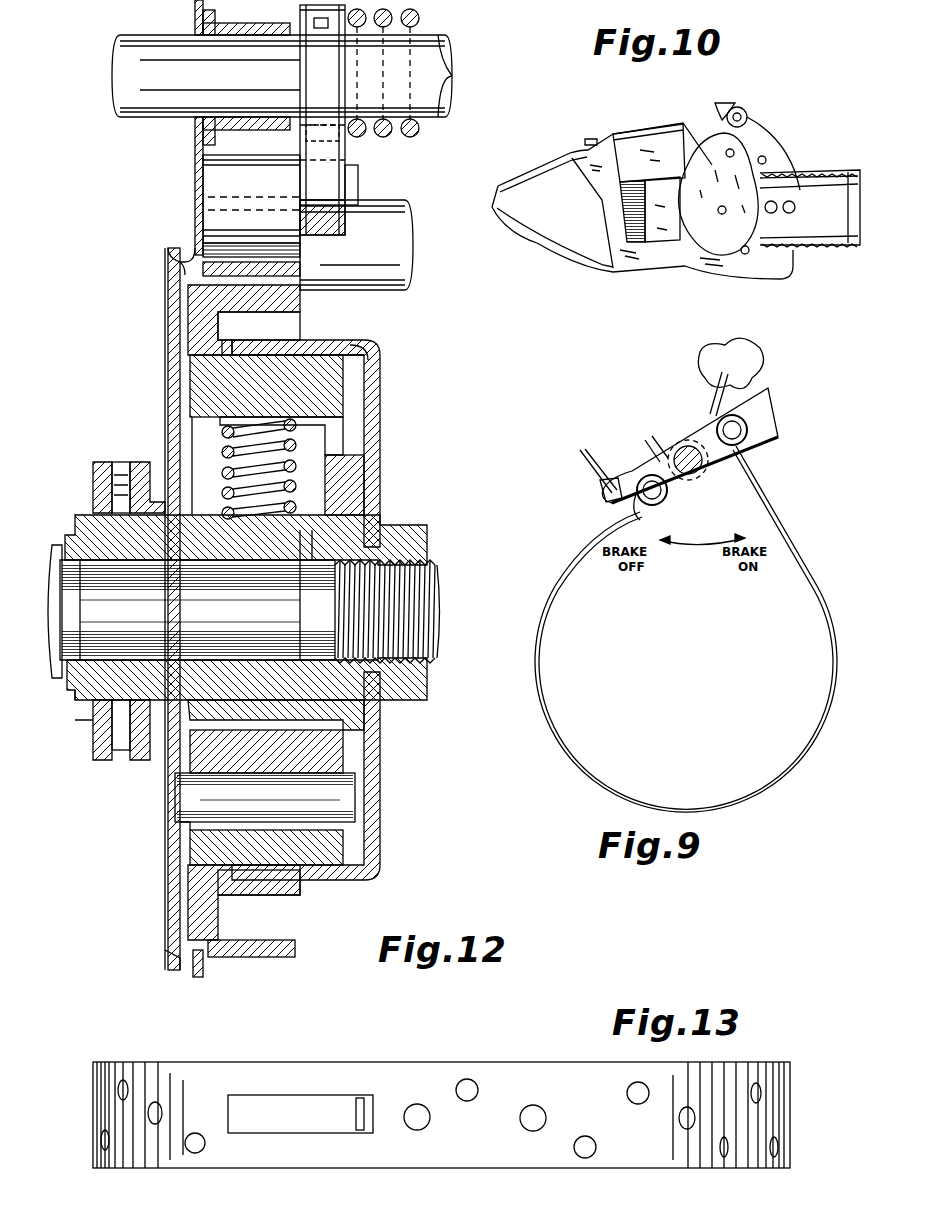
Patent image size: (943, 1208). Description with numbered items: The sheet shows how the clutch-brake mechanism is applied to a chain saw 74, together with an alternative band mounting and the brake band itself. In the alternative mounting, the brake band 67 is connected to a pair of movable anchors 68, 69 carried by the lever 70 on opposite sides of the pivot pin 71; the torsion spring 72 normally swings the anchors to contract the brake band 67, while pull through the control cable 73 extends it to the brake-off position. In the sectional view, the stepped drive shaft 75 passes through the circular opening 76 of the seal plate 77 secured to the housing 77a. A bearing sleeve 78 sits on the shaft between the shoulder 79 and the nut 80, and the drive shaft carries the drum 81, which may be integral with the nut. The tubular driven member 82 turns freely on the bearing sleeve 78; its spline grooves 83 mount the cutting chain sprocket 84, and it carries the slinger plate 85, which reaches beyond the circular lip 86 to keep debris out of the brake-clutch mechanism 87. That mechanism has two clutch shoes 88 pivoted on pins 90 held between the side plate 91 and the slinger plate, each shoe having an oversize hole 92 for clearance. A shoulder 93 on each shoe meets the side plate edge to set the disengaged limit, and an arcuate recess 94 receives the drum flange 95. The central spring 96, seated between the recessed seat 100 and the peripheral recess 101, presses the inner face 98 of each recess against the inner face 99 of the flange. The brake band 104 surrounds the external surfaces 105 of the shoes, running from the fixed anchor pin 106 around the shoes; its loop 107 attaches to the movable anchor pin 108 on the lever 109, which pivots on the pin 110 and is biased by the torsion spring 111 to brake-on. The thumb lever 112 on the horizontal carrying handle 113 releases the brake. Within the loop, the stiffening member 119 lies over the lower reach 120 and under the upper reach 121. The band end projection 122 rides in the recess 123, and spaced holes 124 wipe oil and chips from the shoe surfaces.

In FIG. 9, the brake band 67 is at (545, 697).
In FIG. 9, the movable anchor 68 is at (650, 496).
In FIG. 9, the movable anchor 69 is at (750, 428).
In FIG. 9, the lever 70 is at (745, 403).
In FIG. 9, the pivot pin 71 is at (694, 482).
In FIG. 9, the torsion spring 72 is at (712, 398).
In FIG. 9, the control cable 73 is at (585, 464).
In FIG. 10, the chain saw 74 is at (663, 112).
In FIG. 12, the stepped drive shaft 75 is at (185, 614).
In FIG. 12, the circular opening 76 is at (166, 955).
In FIG. 12, the seal plate 77 is at (195, 198).
In FIG. 10, the housing 77a is at (720, 240).
In FIG. 12, the bearing sleeve 78 is at (128, 640).
In FIG. 12, the shoulder 79 is at (85, 705).
In FIG. 12, the nut 80 is at (420, 538).
In FIG. 12, the drum 81 is at (380, 432).
In FIG. 12, the tubular driven member 82 is at (300, 548).
In FIG. 12, the spline grooves 83 is at (93, 492).
In FIG. 12, the cutting chain sprocket 84 is at (118, 462).
In FIG. 12, the slinger plate 85 is at (168, 373).
In FIG. 12, the circular lip 86 is at (170, 262).
In FIG. 12, the brake-clutch mechanism 87 is at (392, 335).
In FIG. 12, the clutch shoes 88 is at (330, 385).
In FIG. 12, the pins 90 is at (290, 808).
In FIG. 12, the side plate 91 is at (330, 746).
In FIG. 12, the oversize hole 92 is at (195, 828).
In FIG. 12, the shoulder 93 is at (350, 480).
In FIG. 12, the arcuate recess 94 is at (220, 323).
In FIG. 12, the drum flange 95 is at (270, 895).
In FIG. 12, the central spring 96 is at (226, 430).
In FIG. 12, the inner face 98 is at (222, 343).
In FIG. 12, the inner face 99 is at (348, 352).
In FIG. 12, the recessed seat 100 is at (340, 430).
In FIG. 12, the peripheral recess 101 is at (245, 540).
In FIG. 12, the brake band 104 is at (268, 957).
In FIG. 13, the brake band 104 is at (555, 1062).
In FIG. 12, the external surfaces 105 is at (240, 290).
In FIG. 12, the fixed anchor pin 106 is at (395, 250).
In FIG. 12, the loop 107 is at (230, 175).
In FIG. 12, the movable anchor pin 108 is at (360, 180).
In FIG. 12, the lever 109 is at (340, 145).
In FIG. 12, the pin 110 is at (250, 82).
In FIG. 12, the torsion spring 111 is at (425, 125).
In FIG. 10, the thumb lever 112 is at (722, 103).
In FIG. 10, the horizontal carrying handle 113 is at (750, 110).
In FIG. 12, the stiffening member 119 is at (195, 252).
In FIG. 12, the lower reach 120 is at (290, 275).
In FIG. 12, the upper reach 121 is at (225, 243).
In FIG. 13, the projection 122 is at (365, 1105).
In FIG. 13, the recess 123 is at (282, 1097).
In FIG. 13, the holes 124 is at (470, 1130).